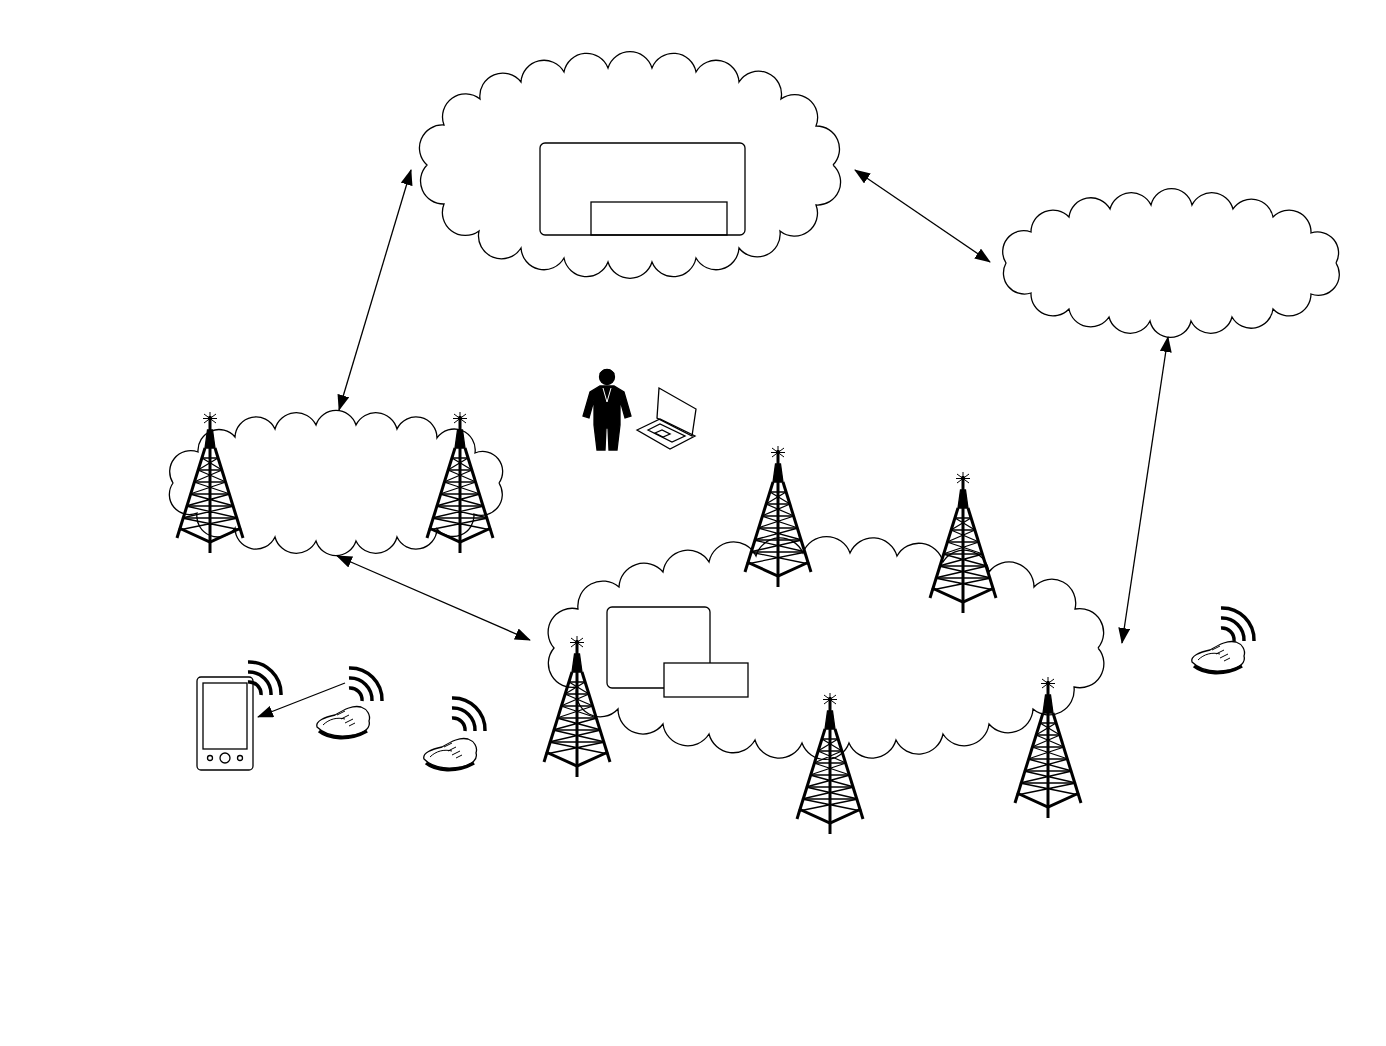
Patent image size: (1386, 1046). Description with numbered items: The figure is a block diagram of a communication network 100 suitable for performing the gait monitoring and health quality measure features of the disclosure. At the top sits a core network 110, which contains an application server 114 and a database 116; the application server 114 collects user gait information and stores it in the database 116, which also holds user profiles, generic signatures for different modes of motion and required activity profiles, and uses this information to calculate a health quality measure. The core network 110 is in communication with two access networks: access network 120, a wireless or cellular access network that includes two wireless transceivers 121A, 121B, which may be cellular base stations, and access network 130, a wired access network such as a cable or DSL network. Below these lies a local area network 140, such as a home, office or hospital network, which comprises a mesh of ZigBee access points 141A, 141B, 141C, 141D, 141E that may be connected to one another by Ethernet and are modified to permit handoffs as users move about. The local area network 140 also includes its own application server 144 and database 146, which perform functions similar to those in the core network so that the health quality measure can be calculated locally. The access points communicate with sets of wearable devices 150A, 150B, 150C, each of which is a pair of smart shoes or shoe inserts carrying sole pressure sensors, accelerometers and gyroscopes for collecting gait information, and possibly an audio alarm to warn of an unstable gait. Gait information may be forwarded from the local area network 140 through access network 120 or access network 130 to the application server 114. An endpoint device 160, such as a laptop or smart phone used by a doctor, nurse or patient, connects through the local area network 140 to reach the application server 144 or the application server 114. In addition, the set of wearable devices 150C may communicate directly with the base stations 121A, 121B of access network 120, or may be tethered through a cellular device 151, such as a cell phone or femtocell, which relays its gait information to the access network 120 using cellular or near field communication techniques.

The communication network 100 is at (152, 71).
The core network 110 is at (614, 106).
The application server 114 is at (626, 193).
The database 116 is at (692, 229).
The access network 120 is at (321, 507).
The wireless transceiver 121A is at (204, 545).
The wireless transceiver 121B is at (466, 545).
The access network 130 is at (1154, 287).
The local area network 140 is at (812, 669).
The ZigBee access point 141A is at (582, 766).
The ZigBee access point 141B is at (862, 805).
The ZigBee access point 141C is at (1077, 775).
The ZigBee access point 141D is at (977, 528).
The ZigBee access point 141E is at (792, 503).
The application server 144 is at (641, 656).
The database 146 is at (740, 693).
The set of wearable devices 150A is at (463, 766).
The set of wearable devices 150B is at (1233, 670).
The set of wearable devices 150C is at (358, 732).
The cellular device 151 is at (195, 753).
The endpoint device 160 is at (670, 449).